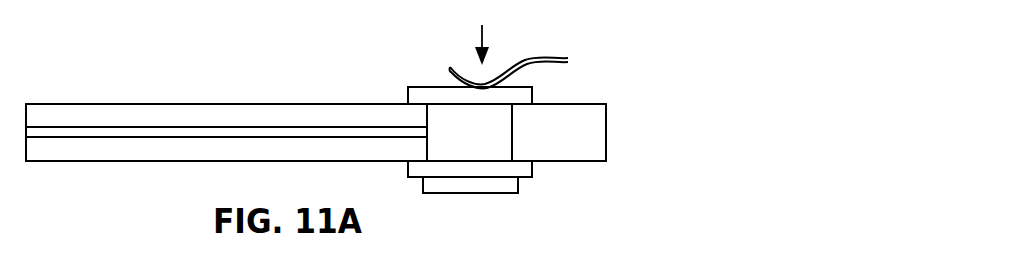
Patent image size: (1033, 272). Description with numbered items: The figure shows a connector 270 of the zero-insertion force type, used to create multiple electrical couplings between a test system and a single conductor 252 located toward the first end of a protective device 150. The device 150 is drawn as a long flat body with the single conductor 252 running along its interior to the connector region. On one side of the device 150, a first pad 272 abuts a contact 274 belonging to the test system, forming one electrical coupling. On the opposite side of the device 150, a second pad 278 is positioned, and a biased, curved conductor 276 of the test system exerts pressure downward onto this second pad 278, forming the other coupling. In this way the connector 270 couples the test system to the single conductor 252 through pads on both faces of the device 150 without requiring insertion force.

The device 150 is at (143, 104).
The single conductor 252 is at (235, 127).
The connector 270 is at (626, 75).
The first pad 272 is at (533, 165).
The contact 274 is at (493, 193).
The biased, curved conductor 276 is at (530, 56).
The second pad 278 is at (408, 95).